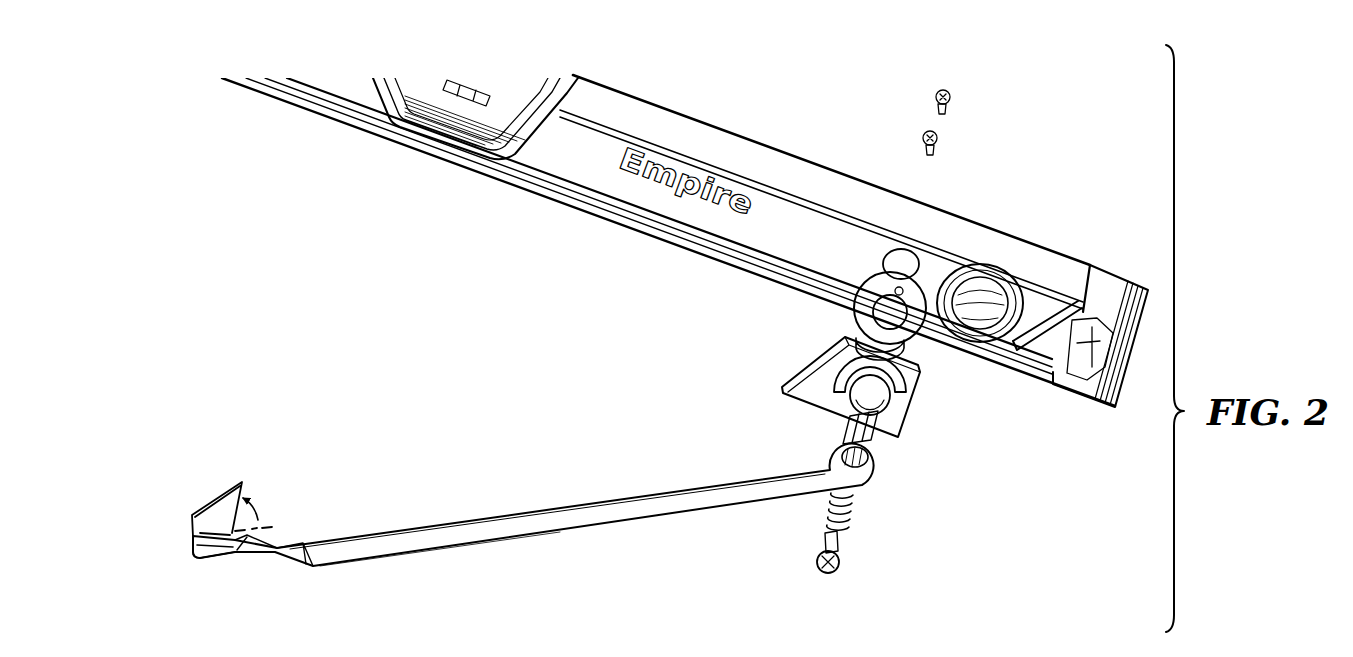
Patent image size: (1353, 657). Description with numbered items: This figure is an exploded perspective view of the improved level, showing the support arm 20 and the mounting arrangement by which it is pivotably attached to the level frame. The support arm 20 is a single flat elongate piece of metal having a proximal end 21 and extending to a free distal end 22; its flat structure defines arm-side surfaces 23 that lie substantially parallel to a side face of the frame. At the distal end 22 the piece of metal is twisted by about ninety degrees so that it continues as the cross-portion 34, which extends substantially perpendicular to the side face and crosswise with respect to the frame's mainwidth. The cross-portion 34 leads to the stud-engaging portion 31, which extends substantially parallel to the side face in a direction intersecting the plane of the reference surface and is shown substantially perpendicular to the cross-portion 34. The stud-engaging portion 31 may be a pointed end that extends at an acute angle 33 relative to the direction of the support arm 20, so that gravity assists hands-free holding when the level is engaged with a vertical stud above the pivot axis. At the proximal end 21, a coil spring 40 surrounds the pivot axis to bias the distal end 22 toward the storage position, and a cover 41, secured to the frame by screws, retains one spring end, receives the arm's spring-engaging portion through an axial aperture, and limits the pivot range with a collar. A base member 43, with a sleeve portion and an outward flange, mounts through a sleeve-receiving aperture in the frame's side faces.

The support arm 20 is at (467, 532).
The proximal end 21 is at (857, 475).
The free distal end 22 is at (273, 550).
The arm-side surfaces 23 is at (557, 522).
The stud-engaging portion 31 is at (230, 500).
The acute angle 33 is at (262, 523).
The cross-portion 34 is at (202, 547).
The coil spring 40 is at (873, 332).
The cover 41 is at (812, 390).
The base member 43 is at (913, 333).